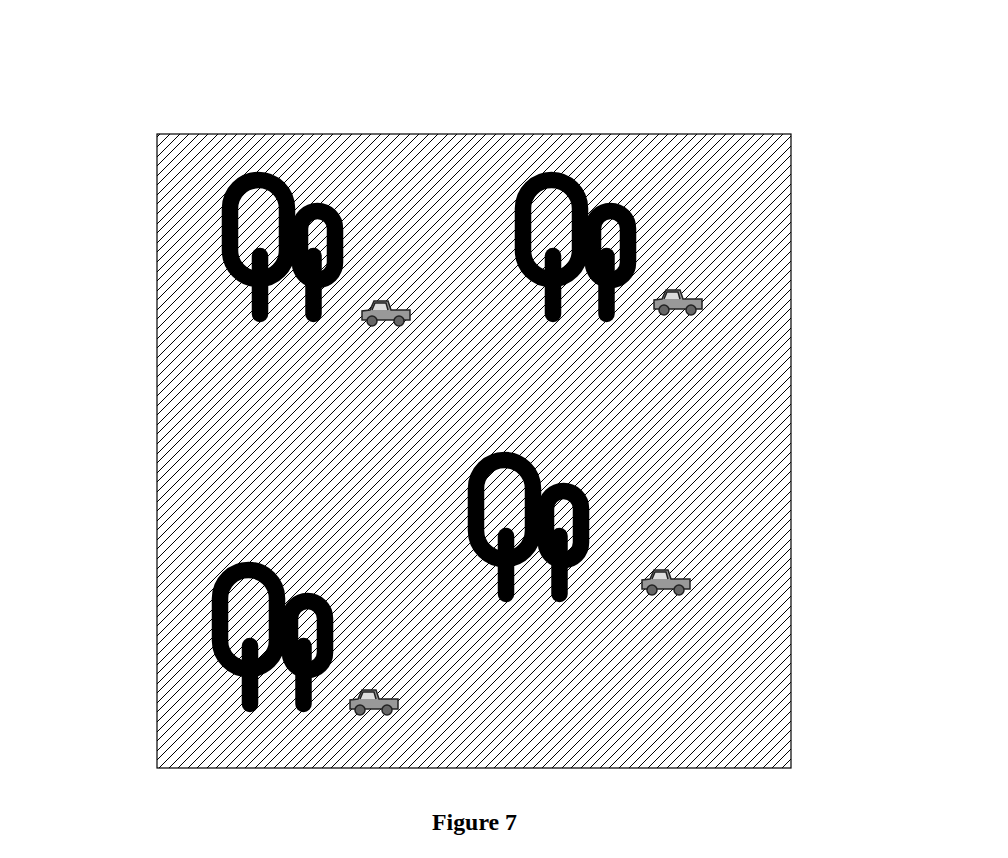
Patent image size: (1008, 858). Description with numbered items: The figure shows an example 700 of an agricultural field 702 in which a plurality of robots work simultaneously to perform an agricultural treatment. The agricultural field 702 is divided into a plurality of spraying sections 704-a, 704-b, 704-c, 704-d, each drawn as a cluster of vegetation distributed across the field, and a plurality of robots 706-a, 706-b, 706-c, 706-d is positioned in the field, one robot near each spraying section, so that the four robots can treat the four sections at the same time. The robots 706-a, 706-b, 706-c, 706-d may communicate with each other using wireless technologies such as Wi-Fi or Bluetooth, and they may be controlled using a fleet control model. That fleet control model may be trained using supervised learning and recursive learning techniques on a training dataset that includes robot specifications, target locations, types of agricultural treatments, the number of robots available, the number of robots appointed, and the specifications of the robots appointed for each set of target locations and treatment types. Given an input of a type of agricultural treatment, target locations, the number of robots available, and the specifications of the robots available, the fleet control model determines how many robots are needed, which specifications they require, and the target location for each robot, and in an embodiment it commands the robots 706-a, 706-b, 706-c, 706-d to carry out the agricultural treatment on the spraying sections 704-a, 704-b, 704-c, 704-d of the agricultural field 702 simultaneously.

The example 700 is at (150, 77).
The agricultural field 702 is at (454, 134).
The spraying section 704-a is at (221, 213).
The spraying section 704-b is at (635, 222).
The spraying section 704-c is at (587, 495).
The spraying section 704-d is at (211, 622).
The robot 706-a is at (360, 325).
The robot 706-b is at (700, 290).
The robot 706-c is at (690, 575).
The robot 706-d is at (362, 715).